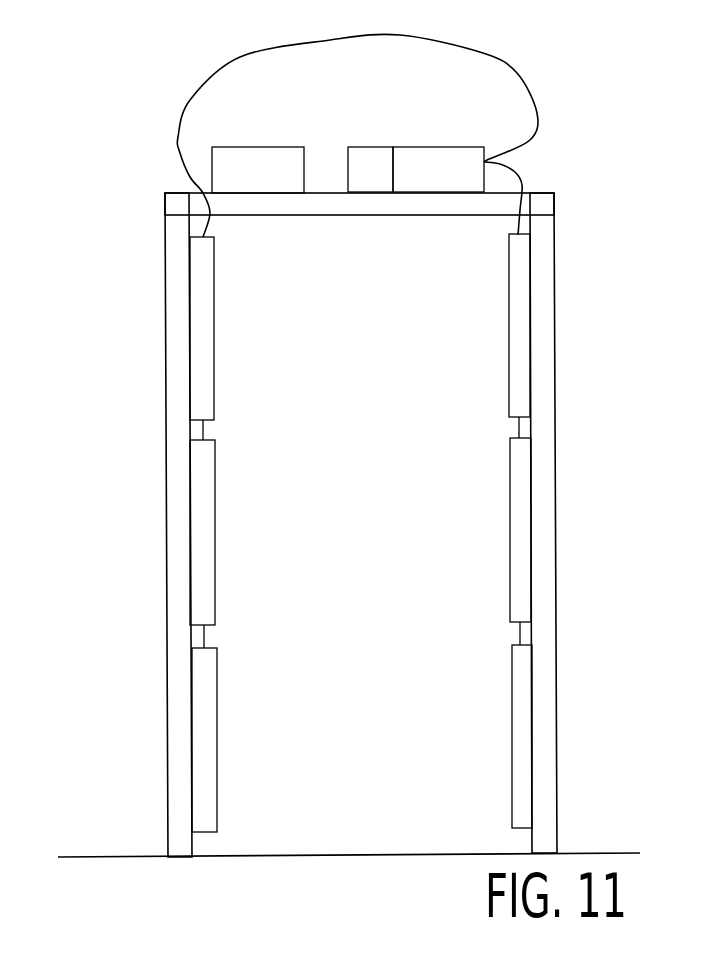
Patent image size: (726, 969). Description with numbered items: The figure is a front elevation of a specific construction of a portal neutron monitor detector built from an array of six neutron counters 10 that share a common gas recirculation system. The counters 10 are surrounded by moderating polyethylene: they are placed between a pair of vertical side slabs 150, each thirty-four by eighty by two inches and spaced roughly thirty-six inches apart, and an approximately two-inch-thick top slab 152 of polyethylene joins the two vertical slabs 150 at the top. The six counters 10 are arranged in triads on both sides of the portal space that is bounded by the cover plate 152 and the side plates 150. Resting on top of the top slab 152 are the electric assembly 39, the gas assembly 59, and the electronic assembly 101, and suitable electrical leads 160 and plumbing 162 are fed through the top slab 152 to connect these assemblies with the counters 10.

The counter 10 is at (214, 330).
The electric assembly 39 is at (357, 147).
The gas assembly 59 is at (253, 147).
The electronic assembly 101 is at (441, 147).
The slab 150 is at (167, 620).
The slab 152 is at (385, 216).
The electrical leads 160 is at (523, 70).
The plumbing 162 is at (522, 175).